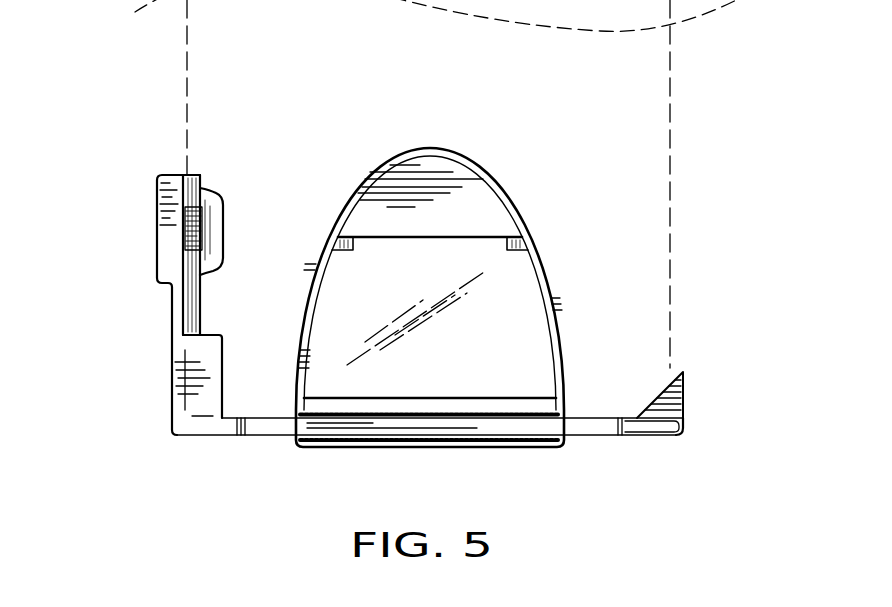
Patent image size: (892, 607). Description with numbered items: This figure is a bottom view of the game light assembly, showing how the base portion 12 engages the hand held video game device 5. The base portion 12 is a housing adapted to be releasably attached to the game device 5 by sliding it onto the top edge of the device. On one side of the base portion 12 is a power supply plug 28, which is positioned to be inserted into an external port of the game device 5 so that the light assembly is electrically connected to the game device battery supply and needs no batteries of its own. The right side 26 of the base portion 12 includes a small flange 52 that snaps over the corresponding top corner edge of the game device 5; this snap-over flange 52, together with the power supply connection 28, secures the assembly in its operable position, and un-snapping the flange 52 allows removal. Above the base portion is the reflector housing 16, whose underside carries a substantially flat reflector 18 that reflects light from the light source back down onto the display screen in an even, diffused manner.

The hand held video game device 5 is at (645, 194).
The base portion 12 is at (272, 427).
The reflector housing 16 is at (437, 160).
The reflector 18 is at (527, 289).
The right side 26 is at (687, 422).
The power supply plug 28 is at (198, 222).
The flange 52 is at (687, 385).